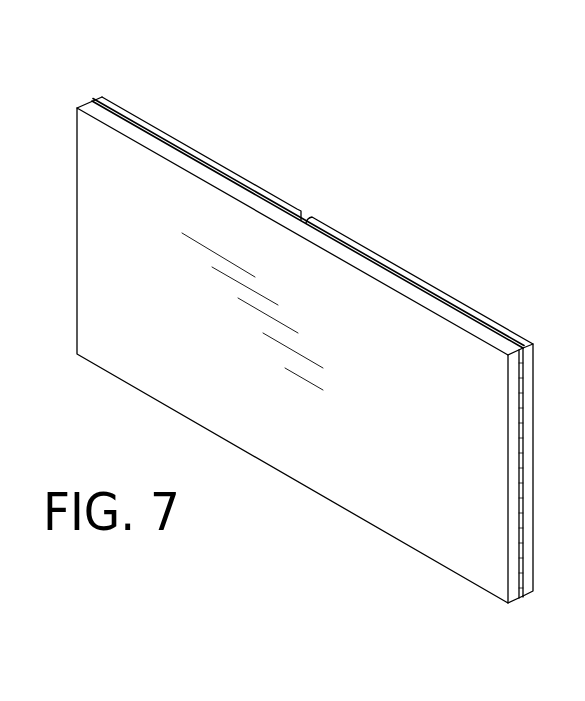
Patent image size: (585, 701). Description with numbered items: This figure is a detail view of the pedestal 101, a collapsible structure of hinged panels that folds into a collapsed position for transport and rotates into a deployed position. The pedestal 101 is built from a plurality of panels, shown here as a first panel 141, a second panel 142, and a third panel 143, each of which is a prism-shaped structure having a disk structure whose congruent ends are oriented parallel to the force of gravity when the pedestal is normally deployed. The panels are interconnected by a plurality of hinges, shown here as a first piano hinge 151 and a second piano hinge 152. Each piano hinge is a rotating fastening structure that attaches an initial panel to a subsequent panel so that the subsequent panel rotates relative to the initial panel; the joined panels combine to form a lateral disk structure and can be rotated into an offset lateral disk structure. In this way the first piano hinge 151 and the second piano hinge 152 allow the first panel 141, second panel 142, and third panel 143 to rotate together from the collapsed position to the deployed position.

The pedestal 101 is at (402, 123).
The first panel 141 is at (230, 168).
The second panel 142 is at (300, 447).
The third panel 143 is at (387, 262).
The first piano hinge 151 is at (92, 101).
The second piano hinge 152 is at (527, 412).